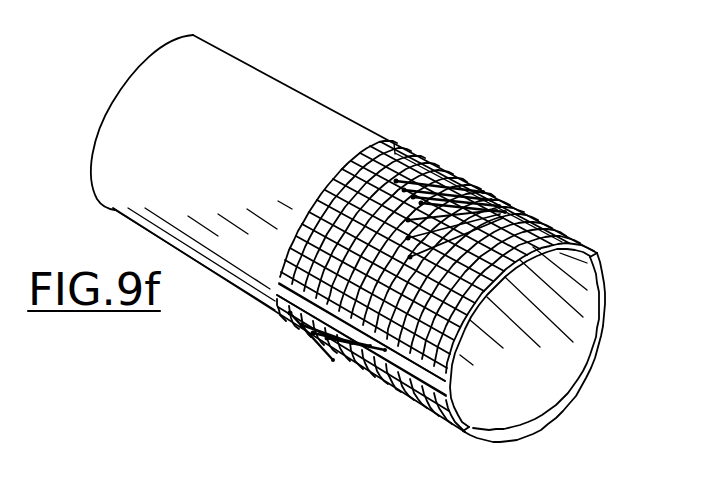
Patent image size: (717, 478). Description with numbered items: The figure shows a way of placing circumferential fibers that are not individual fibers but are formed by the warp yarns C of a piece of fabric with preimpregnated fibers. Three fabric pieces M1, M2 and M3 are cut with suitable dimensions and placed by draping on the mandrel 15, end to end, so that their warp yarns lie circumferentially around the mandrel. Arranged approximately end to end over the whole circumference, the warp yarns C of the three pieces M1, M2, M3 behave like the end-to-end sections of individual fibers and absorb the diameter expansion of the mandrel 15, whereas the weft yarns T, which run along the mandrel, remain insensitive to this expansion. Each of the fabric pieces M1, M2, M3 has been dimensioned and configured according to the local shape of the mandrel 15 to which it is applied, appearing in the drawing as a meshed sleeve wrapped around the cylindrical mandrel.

The mandrel 15 is at (282, 82).
The warp yarns C is at (421, 203).
The weft yarns T is at (505, 212).
The fabric piece M1 is at (538, 239).
The fabric piece M2 is at (604, 338).
The fabric piece M3 is at (438, 427).